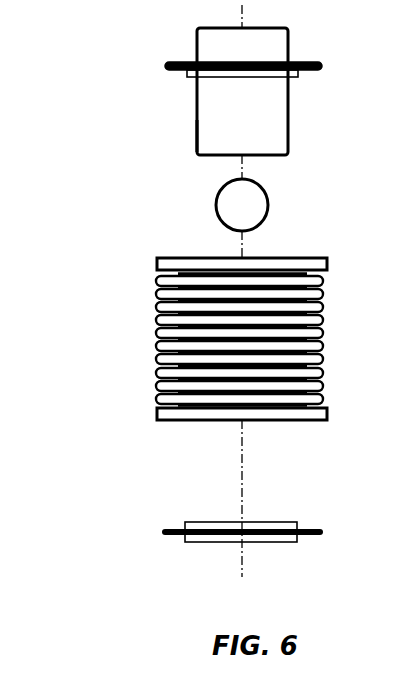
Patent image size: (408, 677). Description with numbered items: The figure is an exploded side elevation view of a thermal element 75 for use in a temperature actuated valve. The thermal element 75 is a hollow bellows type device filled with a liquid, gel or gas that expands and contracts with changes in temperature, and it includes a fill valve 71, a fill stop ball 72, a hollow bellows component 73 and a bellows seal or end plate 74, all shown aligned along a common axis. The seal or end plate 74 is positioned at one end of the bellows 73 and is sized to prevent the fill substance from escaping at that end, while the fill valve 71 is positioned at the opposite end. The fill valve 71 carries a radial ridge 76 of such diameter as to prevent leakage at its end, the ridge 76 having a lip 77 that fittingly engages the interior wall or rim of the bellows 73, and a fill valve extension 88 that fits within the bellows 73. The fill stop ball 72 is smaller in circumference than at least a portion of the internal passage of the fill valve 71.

The fill valve 71 is at (166, 114).
The fill stop ball 72 is at (196, 198).
The hollow bellows component 73 is at (136, 352).
The bellows seal or end plate 74 is at (141, 516).
The thermal element 75 is at (179, 329).
The radial ridge 76 is at (166, 62).
The lip 77 is at (293, 76).
The fill valve extension 88 is at (288, 128).